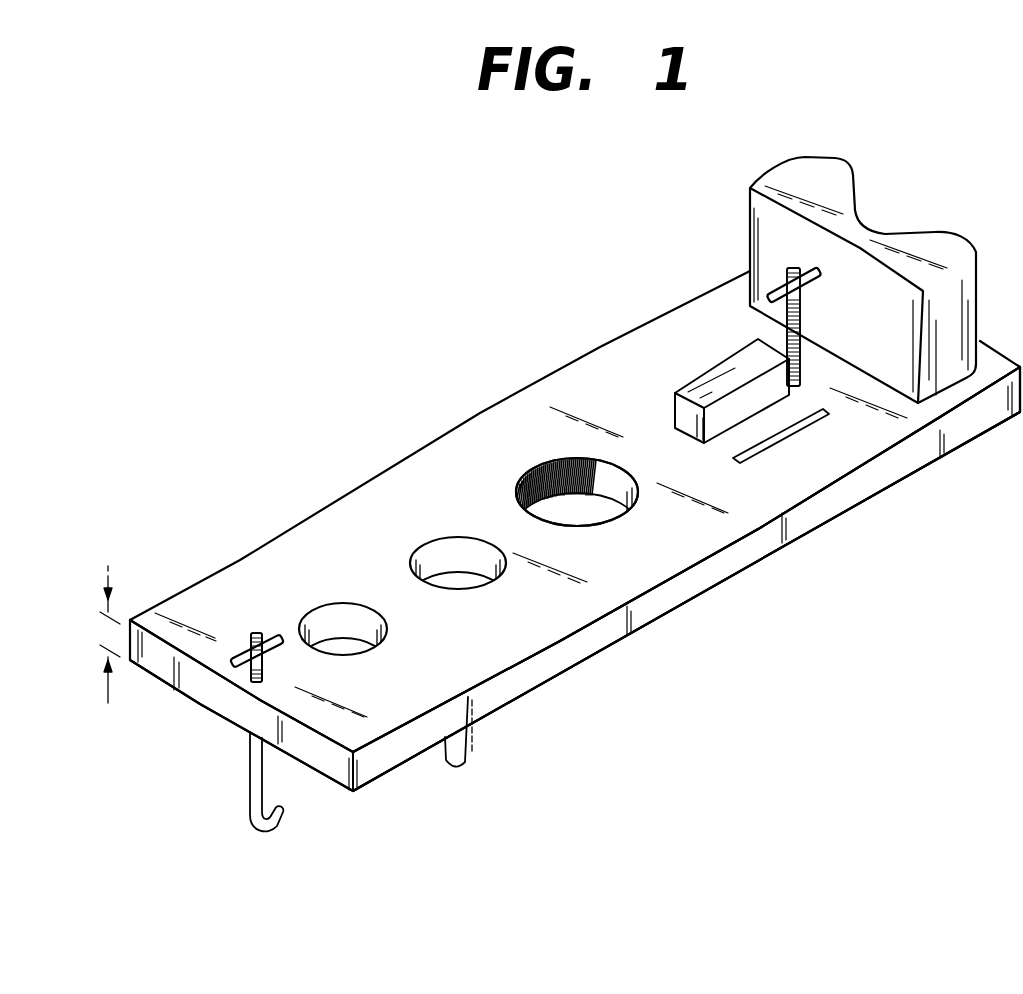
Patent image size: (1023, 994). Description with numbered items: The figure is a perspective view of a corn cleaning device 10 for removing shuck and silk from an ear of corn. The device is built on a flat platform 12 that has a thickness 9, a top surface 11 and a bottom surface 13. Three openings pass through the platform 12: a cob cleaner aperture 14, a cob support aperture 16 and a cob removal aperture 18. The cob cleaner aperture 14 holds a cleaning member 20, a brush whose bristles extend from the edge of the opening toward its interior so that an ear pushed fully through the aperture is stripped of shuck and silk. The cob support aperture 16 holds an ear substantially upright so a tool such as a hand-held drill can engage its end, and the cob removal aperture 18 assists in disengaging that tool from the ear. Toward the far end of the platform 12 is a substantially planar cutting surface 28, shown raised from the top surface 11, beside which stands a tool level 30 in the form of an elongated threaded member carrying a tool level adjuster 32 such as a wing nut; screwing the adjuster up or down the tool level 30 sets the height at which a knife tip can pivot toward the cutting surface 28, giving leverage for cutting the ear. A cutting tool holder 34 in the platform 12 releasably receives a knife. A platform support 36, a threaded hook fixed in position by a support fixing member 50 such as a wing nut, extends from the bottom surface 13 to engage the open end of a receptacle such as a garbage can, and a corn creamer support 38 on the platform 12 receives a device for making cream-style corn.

The thickness 9 is at (110, 630).
The corn cleaning device 10 is at (438, 252).
The top surface 11 is at (354, 516).
The platform 12 is at (640, 609).
The bottom surface 13 is at (318, 775).
The cob cleaner aperture 14 is at (612, 457).
The cob support aperture 16 is at (440, 537).
The cob removal aperture 18 is at (327, 606).
The cleaning member 20 is at (541, 460).
The cutting surface 28 is at (724, 372).
The tool level 30 is at (840, 380).
The tool level adjuster 32 is at (776, 292).
The cutting tool holder 34 is at (790, 438).
The platform support 36 is at (248, 770).
The corn creamer support 38 is at (898, 235).
The support fixing member 50 is at (232, 646).